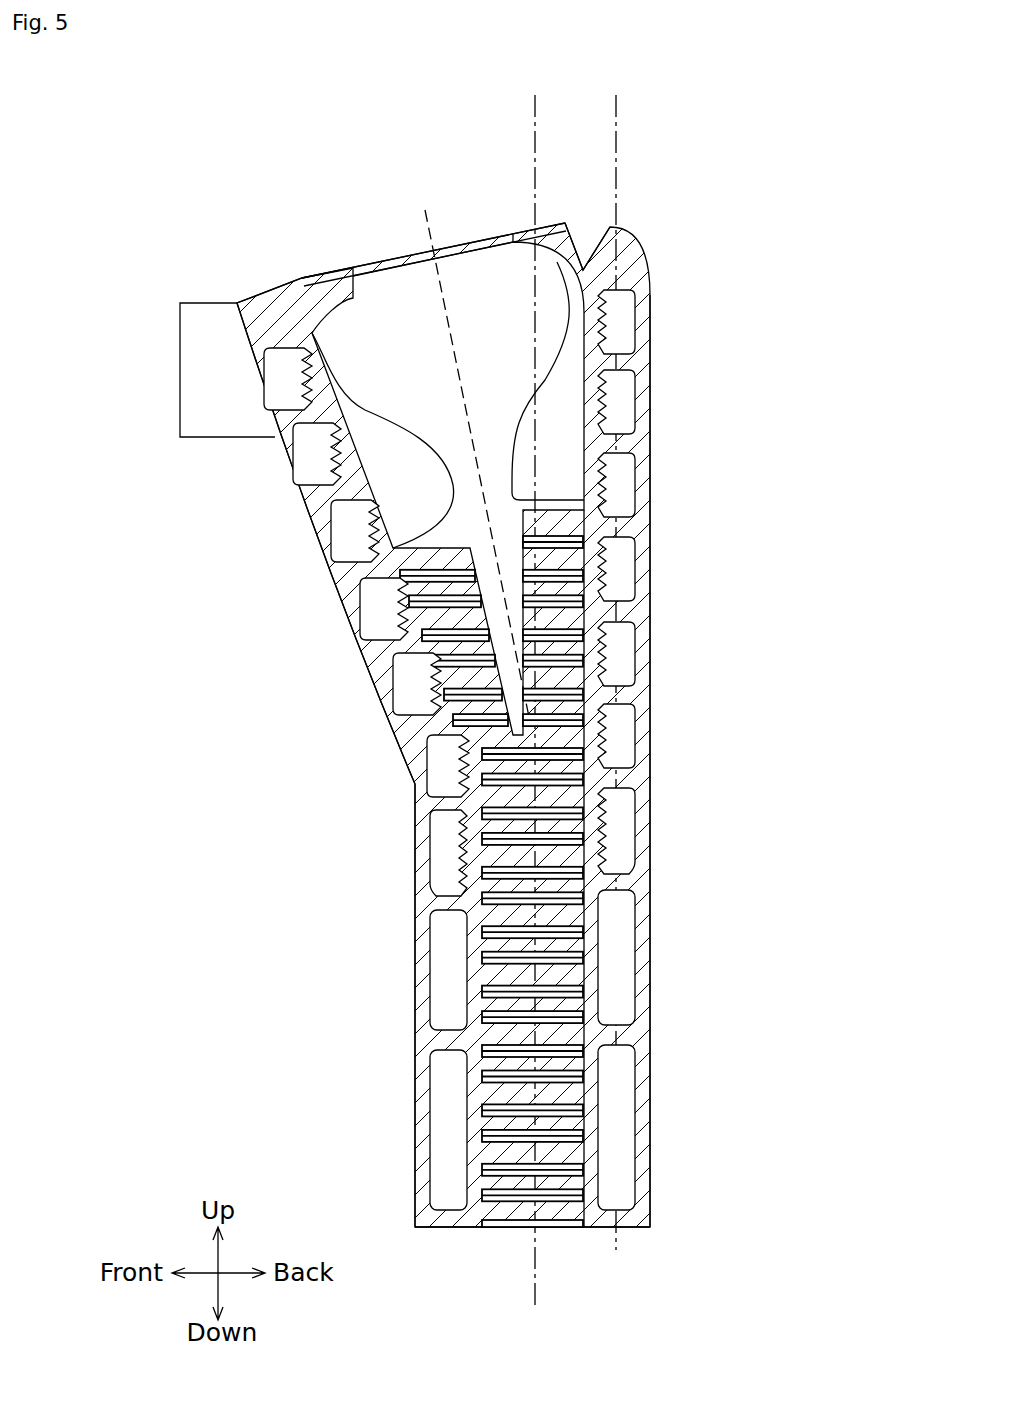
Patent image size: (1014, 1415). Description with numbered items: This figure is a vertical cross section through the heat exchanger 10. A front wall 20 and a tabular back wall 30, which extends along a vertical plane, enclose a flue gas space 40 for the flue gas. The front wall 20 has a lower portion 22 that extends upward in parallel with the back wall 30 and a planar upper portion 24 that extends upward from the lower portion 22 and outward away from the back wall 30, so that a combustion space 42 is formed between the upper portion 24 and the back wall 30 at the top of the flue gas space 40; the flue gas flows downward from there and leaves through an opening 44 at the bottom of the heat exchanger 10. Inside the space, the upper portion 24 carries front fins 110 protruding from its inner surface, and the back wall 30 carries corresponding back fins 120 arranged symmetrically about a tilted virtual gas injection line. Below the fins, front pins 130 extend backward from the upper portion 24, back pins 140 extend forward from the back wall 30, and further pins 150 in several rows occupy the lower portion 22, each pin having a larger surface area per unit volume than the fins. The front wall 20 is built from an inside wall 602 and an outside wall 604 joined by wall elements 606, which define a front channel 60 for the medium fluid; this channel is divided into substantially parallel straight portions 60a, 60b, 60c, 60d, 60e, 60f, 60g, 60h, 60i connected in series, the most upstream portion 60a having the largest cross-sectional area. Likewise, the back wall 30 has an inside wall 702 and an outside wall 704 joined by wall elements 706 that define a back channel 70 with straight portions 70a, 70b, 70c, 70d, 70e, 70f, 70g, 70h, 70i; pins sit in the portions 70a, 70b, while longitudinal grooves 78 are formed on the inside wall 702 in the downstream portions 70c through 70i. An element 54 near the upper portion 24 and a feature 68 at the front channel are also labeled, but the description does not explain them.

The heat exchanger 10 is at (735, 174).
The front wall 20 is at (378, 793).
The lower portion 22 is at (405, 985).
The upper portion 24 is at (350, 638).
The back wall 30 is at (662, 828).
The flue gas space 40 is at (478, 211).
The combustion space 42 is at (393, 286).
The opening 44 is at (568, 1230).
The connection portion 54 is at (210, 298).
The front channel 60 is at (286, 832).
The straight portion 60a is at (432, 1131).
The straight portion 60b is at (432, 933).
The straight portion 60c is at (432, 860).
The straight portion 60d is at (430, 773).
The straight portion 60e is at (396, 688).
The straight portion 60f is at (362, 616).
The straight portion 60g is at (333, 546).
The straight portion 60h is at (296, 470).
The straight portion 60i is at (245, 370).
The inside wall 602 is at (467, 1208).
The outside wall 604 is at (432, 1208).
The wall elements 606 is at (284, 375).
The partition 68 is at (300, 390).
The back channel 70 is at (670, 801).
The straight portion 70a is at (633, 1123).
The straight portion 70b is at (633, 930).
The straight portion 70c is at (633, 850).
The straight portion 70d is at (633, 740).
The straight portion 70e is at (633, 670).
The straight portion 70f is at (633, 576).
The straight portion 70g is at (633, 498).
The straight portion 70h is at (633, 426).
The straight portion 70i is at (633, 350).
The inside wall 702 is at (590, 1208).
The outside wall 704 is at (636, 1208).
The wall elements 706 is at (614, 320).
The grooves 78 is at (627, 338).
The front fins 110 is at (374, 398).
The back fins 120 is at (540, 366).
The front pins 130 is at (478, 563).
The back pins 140 is at (516, 528).
The pins 150 is at (517, 1230).